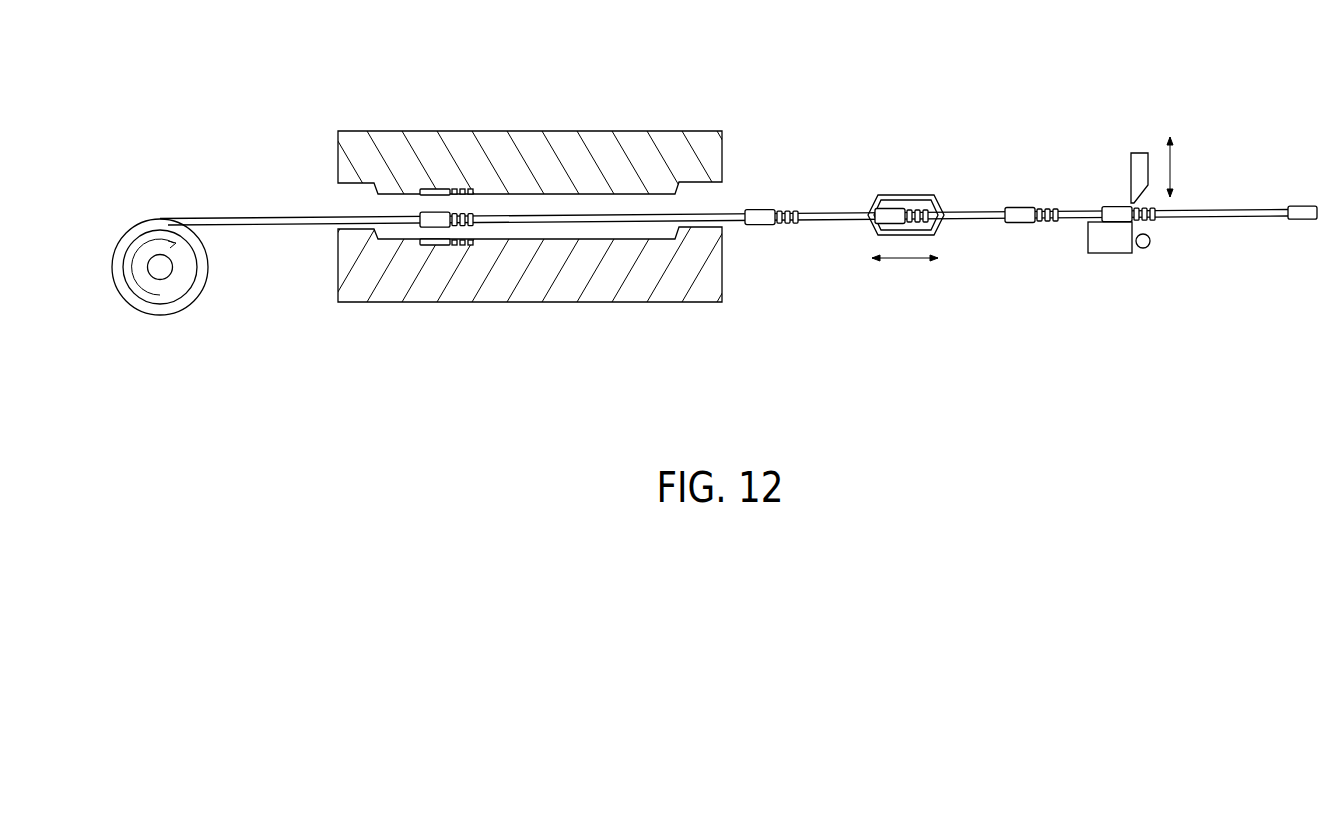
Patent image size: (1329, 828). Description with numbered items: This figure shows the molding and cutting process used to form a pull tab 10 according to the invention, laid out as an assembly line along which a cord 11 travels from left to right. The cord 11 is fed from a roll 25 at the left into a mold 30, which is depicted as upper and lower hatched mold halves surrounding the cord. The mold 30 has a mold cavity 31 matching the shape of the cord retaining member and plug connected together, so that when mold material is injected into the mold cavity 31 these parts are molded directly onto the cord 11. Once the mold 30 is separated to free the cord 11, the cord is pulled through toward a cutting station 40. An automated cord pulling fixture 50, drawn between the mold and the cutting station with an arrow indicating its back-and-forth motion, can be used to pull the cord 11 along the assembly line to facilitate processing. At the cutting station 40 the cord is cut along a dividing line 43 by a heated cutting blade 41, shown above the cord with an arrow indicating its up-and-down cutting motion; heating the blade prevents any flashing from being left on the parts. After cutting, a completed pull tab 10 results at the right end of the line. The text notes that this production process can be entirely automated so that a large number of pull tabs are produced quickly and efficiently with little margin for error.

The pull tab 10 is at (1230, 213).
The cord 11 is at (248, 222).
The roll 25 is at (183, 278).
The mold 30 is at (503, 153).
The mold cavity 31 is at (442, 243).
The cutting station 40 is at (1112, 243).
The heated cutting blade 41 is at (1140, 162).
The dividing line 43 is at (1128, 203).
The automated cord pulling fixture 50 is at (908, 193).